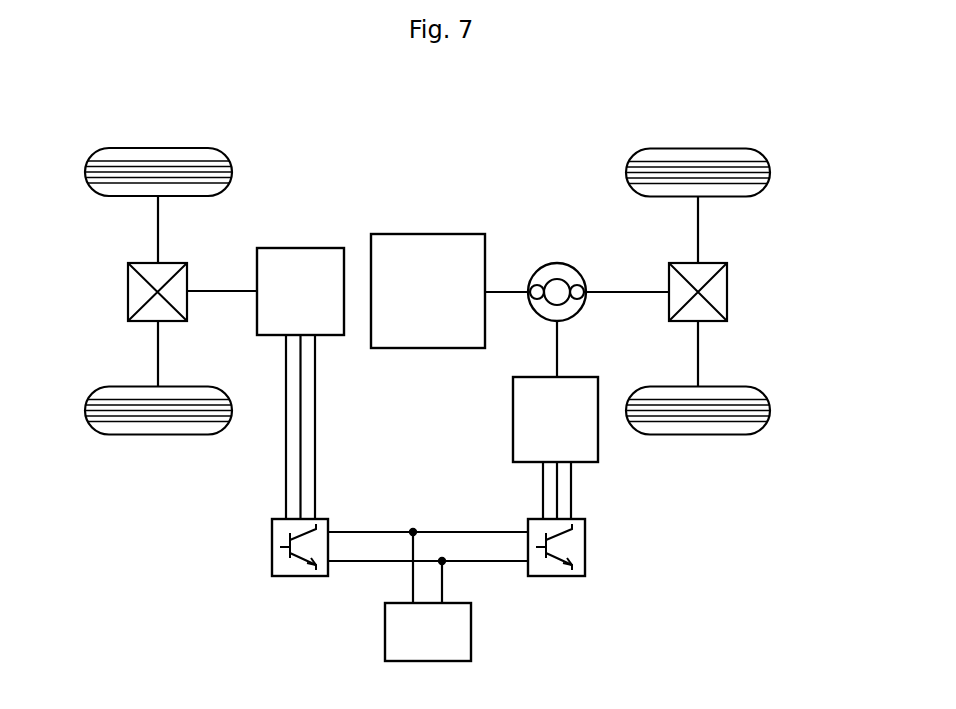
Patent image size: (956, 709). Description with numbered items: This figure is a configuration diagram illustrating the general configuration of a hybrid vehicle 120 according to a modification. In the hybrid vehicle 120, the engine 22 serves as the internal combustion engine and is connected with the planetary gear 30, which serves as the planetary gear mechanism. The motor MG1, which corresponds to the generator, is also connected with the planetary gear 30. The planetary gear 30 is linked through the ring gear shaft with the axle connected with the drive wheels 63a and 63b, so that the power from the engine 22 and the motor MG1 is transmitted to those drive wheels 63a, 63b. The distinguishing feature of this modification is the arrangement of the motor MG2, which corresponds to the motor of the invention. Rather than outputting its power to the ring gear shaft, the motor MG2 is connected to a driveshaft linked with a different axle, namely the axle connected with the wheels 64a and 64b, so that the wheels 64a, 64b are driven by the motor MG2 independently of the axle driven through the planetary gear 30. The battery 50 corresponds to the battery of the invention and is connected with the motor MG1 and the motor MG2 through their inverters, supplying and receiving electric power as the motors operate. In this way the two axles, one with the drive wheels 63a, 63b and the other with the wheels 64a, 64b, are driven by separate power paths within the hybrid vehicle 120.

The hybrid vehicle 120 is at (513, 106).
The engine 22 is at (428, 234).
The planetary gear 30 is at (557, 263).
The battery 50 is at (471, 632).
The drive wheel 63a is at (698, 148).
The drive wheel 63b is at (698, 435).
The wheel 64a is at (157, 148).
The wheel 64b is at (157, 435).
The motor MG1 is at (513, 418).
The motor MG2 is at (300, 248).